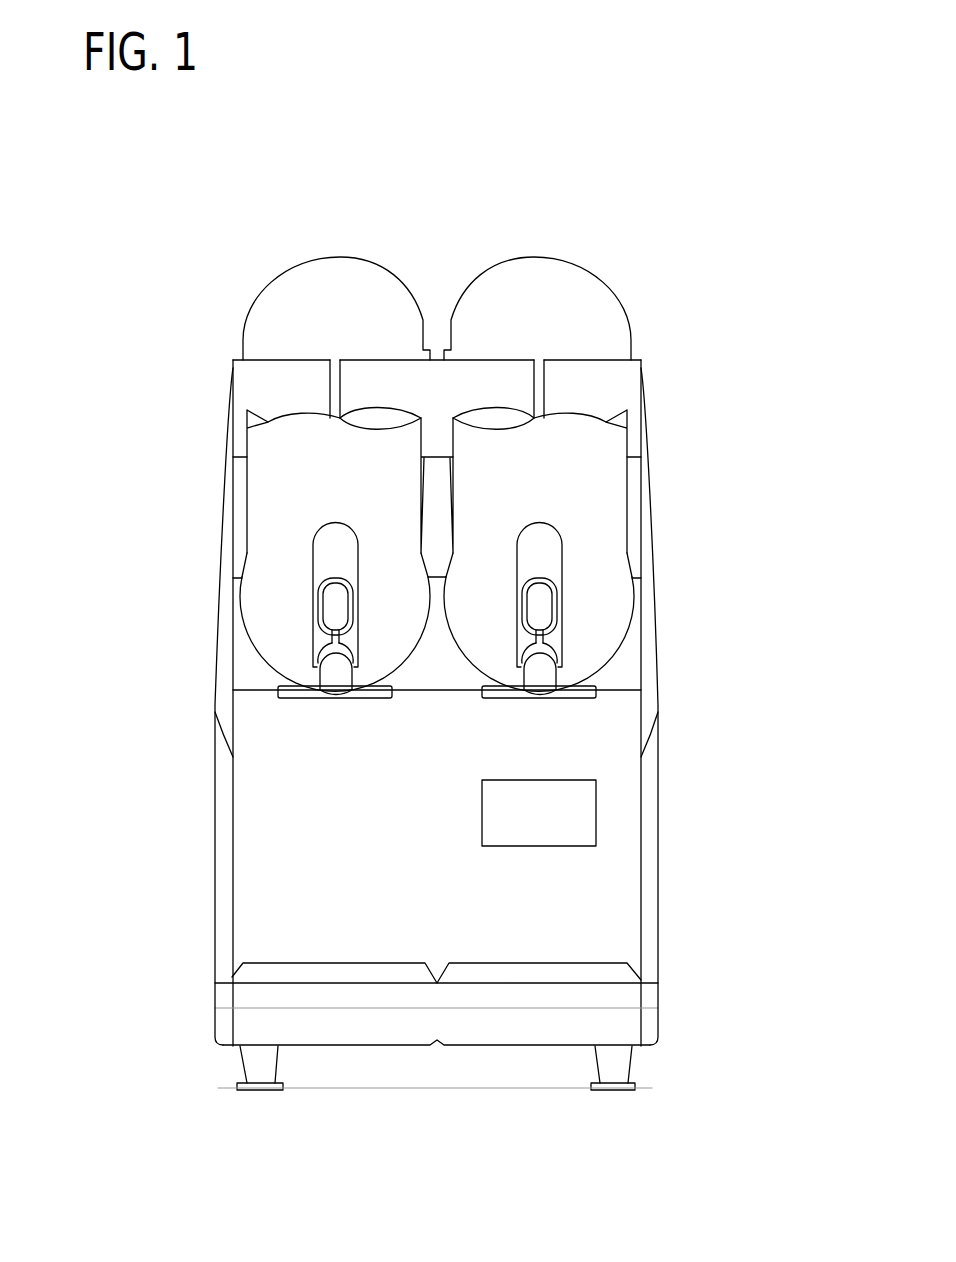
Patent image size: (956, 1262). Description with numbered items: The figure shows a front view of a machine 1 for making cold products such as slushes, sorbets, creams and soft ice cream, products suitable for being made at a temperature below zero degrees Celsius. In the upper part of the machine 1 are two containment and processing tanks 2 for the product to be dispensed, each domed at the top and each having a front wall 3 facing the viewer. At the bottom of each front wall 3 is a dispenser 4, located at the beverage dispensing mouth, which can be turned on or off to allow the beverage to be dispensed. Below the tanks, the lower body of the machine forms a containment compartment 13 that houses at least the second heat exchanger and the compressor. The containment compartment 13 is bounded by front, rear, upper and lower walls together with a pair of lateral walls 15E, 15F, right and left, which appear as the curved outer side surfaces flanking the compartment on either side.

The machine for making cold products 1 is at (747, 519).
The containment and processing tank 2 is at (235, 443).
The front wall 3 is at (321, 477).
The dispenser 4 is at (288, 625).
The containment compartment 13 is at (686, 917).
The right lateral wall 15E is at (682, 802).
The left lateral wall 15F is at (195, 856).